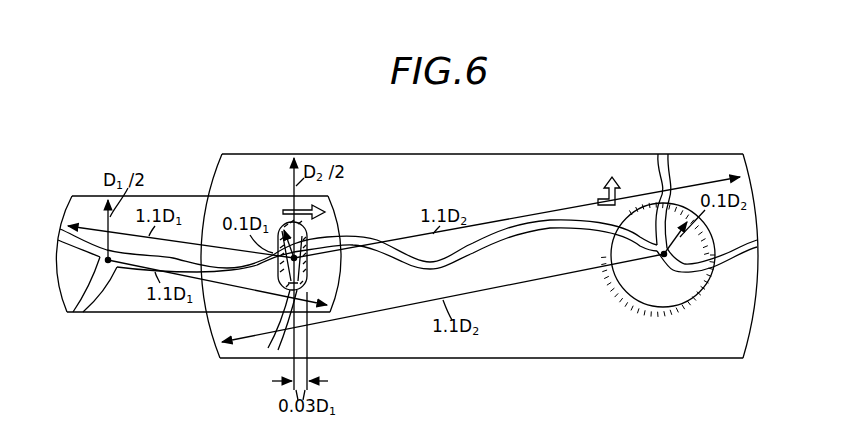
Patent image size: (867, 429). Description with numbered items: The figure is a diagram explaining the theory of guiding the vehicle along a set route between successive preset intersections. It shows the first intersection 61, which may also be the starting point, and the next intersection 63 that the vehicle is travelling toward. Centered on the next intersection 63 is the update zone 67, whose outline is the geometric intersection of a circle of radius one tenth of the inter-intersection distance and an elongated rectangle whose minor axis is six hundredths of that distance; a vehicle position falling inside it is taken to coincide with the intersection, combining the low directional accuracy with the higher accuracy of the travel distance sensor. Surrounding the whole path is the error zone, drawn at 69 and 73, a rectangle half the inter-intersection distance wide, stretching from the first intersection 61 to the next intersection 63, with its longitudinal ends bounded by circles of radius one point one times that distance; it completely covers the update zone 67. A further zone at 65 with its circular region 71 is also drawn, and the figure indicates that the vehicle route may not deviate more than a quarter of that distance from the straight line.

The first intersection 61 is at (110, 263).
The next intersection 63 is at (307, 262).
The third junction point 65 is at (661, 257).
The update zone 67 is at (307, 237).
The error zone 69 is at (166, 313).
The circular region 71 is at (678, 308).
The error zone 73 is at (640, 359).